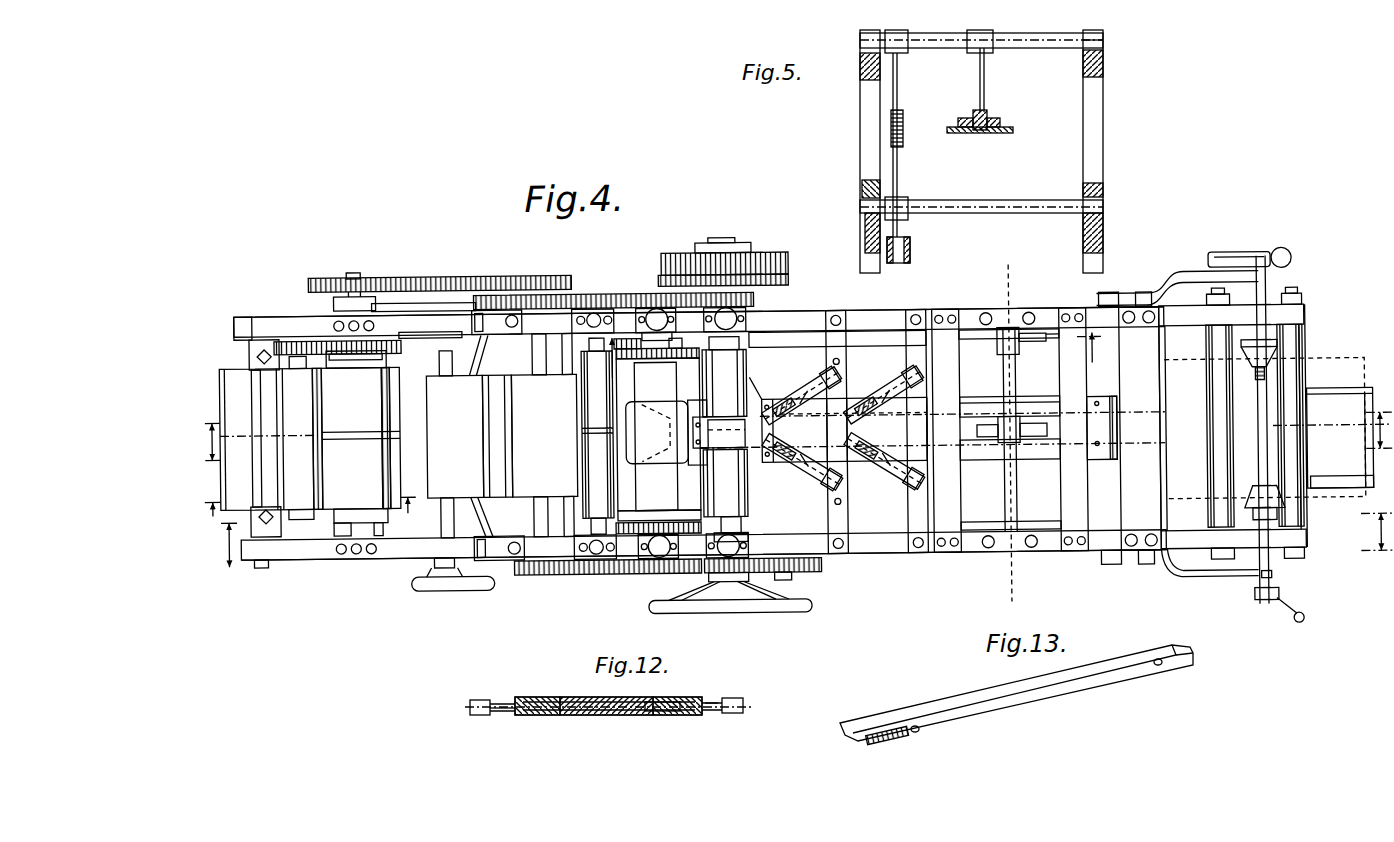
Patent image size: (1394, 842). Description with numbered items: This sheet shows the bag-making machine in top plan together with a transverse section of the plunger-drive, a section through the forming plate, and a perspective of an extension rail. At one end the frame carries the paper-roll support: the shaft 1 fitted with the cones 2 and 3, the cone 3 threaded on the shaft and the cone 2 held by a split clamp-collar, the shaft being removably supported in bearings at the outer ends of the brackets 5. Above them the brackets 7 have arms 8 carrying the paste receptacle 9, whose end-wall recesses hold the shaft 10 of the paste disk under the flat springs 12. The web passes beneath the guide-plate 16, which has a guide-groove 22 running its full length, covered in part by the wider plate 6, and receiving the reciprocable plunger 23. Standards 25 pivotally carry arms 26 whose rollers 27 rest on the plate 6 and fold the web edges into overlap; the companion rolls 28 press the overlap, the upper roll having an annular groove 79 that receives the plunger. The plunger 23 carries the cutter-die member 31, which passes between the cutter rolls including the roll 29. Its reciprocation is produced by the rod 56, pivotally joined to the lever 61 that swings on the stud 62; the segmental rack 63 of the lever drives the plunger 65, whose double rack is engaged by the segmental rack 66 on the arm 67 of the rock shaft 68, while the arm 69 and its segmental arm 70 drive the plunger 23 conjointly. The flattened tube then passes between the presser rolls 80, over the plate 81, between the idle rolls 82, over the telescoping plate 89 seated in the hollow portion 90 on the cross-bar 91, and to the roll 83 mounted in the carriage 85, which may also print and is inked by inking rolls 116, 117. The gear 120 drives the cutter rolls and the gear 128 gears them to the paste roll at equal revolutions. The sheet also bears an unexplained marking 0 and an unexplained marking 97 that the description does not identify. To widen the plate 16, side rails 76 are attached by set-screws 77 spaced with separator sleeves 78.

In FIG. 4, the section line 0 is at (1097, 395).
In FIG. 4, the shaft 1 is at (1273, 400).
In FIG. 4, the cone 2 is at (1306, 511).
In FIG. 4, the cone 3 is at (1280, 355).
In FIG. 4, the brackets 5 is at (1012, 431).
In FIG. 4, the plate 6 is at (772, 465).
In FIG. 12, the plate 6 is at (536, 697).
In FIG. 4, the brackets 7 is at (798, 539).
In FIG. 4, the arms 8 is at (604, 357).
In FIG. 4, the receptacle 9 is at (796, 436).
In FIG. 4, the shaft 10 is at (309, 514).
In FIG. 5, the shaft 10 is at (1110, 55).
In FIG. 4, the flat springs 12 is at (903, 380).
In FIG. 4, the guide-plate 16 is at (1037, 400).
In FIG. 5, the guide-plate 16 is at (1013, 131).
In FIG. 12, the guide-plate 16 is at (672, 718).
In FIG. 4, the guide-groove 22 is at (1057, 335).
In FIG. 12, the guide-groove 22 is at (664, 716).
In FIG. 4, the plunger 23 is at (921, 385).
In FIG. 5, the plunger 23 is at (976, 130).
In FIG. 12, the plunger 23 is at (578, 699).
In FIG. 4, the standards 25 is at (850, 410).
In FIG. 4, the arms 26 is at (790, 413).
In FIG. 4, the rollers 27 is at (788, 398).
In FIG. 4, the companion rolls 28 is at (752, 376).
In FIG. 4, the cutter roll 29 is at (663, 385).
In FIG. 4, the cutter-die member 31 is at (705, 375).
In FIG. 5, the rod 56 is at (912, 256).
In FIG. 5, the lever 61 is at (908, 229).
In FIG. 5, the stud or shaft 62 is at (977, 203).
In FIG. 5, the segmental rack 63 is at (903, 128).
In FIG. 4, the plunger 65 is at (860, 335).
In FIG. 4, the segmental rack 66 is at (1031, 338).
In FIG. 5, the arm 67 is at (899, 80).
In FIG. 4, the rock shaft 68 is at (1017, 516).
In FIG. 5, the rock shaft 68 is at (1037, 48).
In FIG. 5, the arm 69 is at (985, 88).
In FIG. 4, the segmental arm 70 is at (1033, 440).
In FIG. 5, the segmental arm 70 is at (990, 118).
In FIG. 12, the side rails 76 is at (483, 700).
In FIG. 13, the side rails 76 is at (1117, 677).
In FIG. 12, the set-screws 77 is at (613, 724).
In FIG. 12, the separator sleeves 78 is at (713, 699).
In FIG. 4, the annular groove 79 is at (733, 437).
In FIG. 4, the presser rolls 80 is at (598, 404).
In FIG. 4, the plate 81 is at (544, 435).
In FIG. 4, the idle rolls 82 is at (498, 395).
In FIG. 4, the roll 83 is at (352, 464).
In FIG. 4, the carriage 85 is at (314, 555).
In FIG. 4, the plate 89 is at (416, 483).
In FIG. 4, the hollow portion 90 is at (438, 485).
In FIG. 4, the cross-bar 91 is at (480, 510).
In FIG. 4, the gear 97 is at (288, 320).
In FIG. 4, the inking roll 116 is at (745, 524).
In FIG. 4, the inking roll 117 is at (611, 575).
In FIG. 4, the gear 120 is at (650, 565).
In FIG. 4, the gear 128 is at (650, 600).